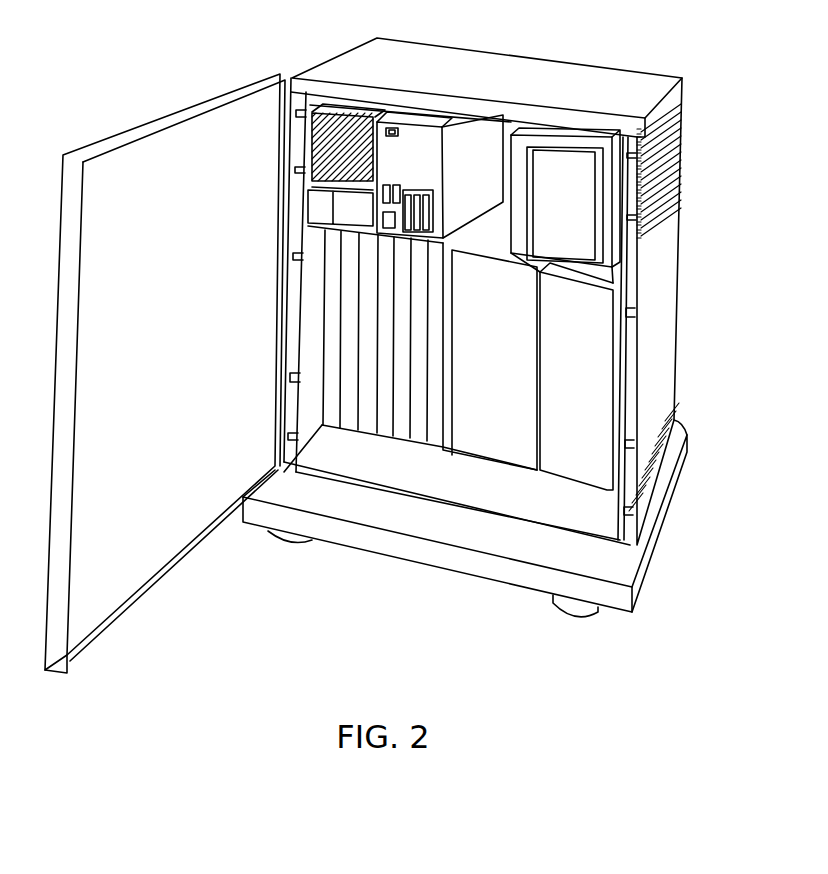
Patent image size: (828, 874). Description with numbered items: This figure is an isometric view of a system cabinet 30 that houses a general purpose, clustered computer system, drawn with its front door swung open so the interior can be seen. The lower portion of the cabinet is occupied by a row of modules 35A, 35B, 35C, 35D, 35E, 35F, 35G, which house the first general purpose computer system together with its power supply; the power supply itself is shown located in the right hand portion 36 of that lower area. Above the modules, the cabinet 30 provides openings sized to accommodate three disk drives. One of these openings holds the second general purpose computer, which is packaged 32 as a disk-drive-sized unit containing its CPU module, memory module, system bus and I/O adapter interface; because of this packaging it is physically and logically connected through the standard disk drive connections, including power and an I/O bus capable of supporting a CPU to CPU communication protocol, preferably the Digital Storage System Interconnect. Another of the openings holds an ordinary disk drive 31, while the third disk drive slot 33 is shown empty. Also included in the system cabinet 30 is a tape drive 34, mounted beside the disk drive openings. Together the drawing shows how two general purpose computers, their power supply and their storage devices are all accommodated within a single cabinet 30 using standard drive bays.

The system cabinet 30 is at (686, 118).
The disk drive 31 is at (318, 110).
The packaged second general purpose computer 32 is at (428, 135).
The third disk drive slot 33 is at (500, 128).
The tape drive 34 is at (565, 163).
The module 35A is at (328, 417).
The module 35B is at (348, 422).
The module 35C is at (366, 427).
The module 35D is at (383, 428).
The module 35E is at (397, 428).
The module 35F is at (413, 432).
The module 35G is at (430, 437).
The right hand portion 36 is at (563, 467).